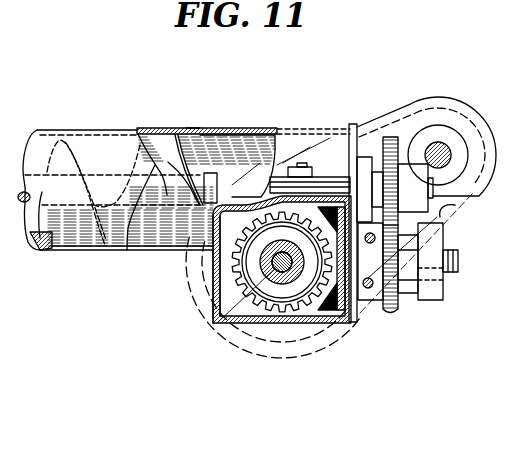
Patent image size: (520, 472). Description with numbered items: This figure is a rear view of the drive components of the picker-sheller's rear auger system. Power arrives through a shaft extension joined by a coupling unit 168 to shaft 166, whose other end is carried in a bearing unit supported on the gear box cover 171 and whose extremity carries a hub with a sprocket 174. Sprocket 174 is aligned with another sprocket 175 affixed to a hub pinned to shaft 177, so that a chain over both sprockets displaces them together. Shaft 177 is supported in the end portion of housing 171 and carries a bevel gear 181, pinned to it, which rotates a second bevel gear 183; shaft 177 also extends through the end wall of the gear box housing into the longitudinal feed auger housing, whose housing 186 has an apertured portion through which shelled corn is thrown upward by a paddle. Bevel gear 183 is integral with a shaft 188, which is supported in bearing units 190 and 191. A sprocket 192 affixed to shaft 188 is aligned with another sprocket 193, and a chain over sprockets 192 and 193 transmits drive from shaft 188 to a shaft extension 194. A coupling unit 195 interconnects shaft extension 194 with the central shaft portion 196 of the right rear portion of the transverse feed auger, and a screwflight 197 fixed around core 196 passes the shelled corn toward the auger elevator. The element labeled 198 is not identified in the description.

The shaft 166 is at (452, 148).
The coupling unit 168 is at (433, 124).
The gear box cover 171 is at (235, 333).
The sprocket 174 is at (447, 118).
The sprocket 175 is at (300, 330).
The shaft 177 is at (217, 322).
The bevel gear 181 is at (240, 278).
The bevel gear 183 is at (327, 320).
The housing 186 is at (101, 126).
The shaft 188 is at (414, 298).
The bearing unit 190 is at (370, 300).
The bearing unit 191 is at (445, 304).
The sprocket 192 is at (391, 316).
The sprocket 193 is at (388, 135).
The shaft extension 194 is at (462, 196).
The coupling unit 195 is at (215, 192).
The central shaft portion 196 is at (186, 130).
The screwflight 197 is at (127, 250).
The bolt 198 is at (345, 150).